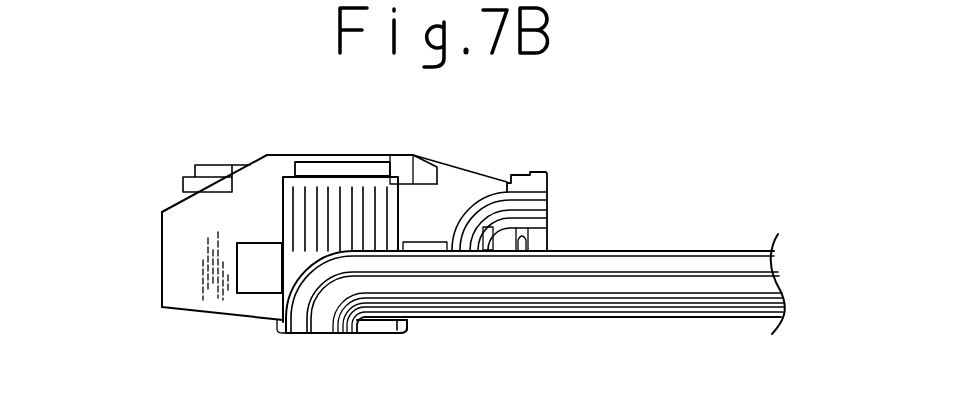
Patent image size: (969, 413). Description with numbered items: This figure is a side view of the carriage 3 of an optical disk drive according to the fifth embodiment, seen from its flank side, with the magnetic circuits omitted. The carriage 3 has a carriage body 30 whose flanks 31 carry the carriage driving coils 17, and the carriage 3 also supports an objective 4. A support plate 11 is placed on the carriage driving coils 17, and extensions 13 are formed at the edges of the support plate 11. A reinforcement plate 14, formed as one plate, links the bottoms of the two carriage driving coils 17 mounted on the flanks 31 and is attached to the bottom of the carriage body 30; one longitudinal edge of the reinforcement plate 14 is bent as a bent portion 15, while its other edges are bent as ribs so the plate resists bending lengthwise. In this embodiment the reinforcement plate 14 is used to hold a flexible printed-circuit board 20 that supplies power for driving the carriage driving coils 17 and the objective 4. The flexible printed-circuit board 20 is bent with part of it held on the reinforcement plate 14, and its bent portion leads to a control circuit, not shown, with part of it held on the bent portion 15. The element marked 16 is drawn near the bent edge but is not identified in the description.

The carriage 3 is at (152, 169).
The objective 4 is at (238, 165).
The support plate 11 is at (400, 172).
The extension 13 is at (428, 178).
The reinforcement plate 14 is at (375, 333).
The bent portion 15 is at (385, 325).
The retaining projection 16 is at (412, 327).
The carriage driving coil 17 is at (300, 216).
The flexible printed-circuit board 20 is at (637, 263).
The carriage body 30 is at (247, 320).
The flank 31 is at (190, 272).